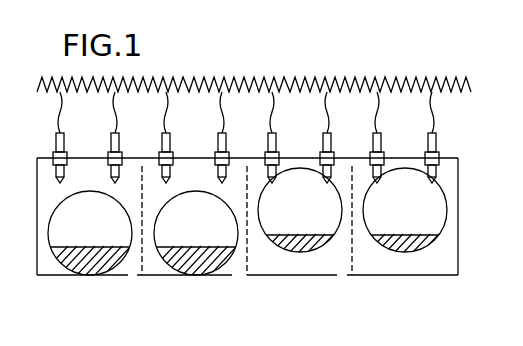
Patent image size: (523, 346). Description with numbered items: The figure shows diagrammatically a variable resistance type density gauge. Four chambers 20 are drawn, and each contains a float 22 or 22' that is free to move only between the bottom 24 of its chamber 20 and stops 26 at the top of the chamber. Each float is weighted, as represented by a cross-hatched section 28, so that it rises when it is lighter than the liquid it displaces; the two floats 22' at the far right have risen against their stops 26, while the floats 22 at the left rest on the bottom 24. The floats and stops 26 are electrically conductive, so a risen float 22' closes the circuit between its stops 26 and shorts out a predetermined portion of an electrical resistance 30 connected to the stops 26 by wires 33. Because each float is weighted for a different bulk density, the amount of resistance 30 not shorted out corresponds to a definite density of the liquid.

The chamber 20 is at (80, 187).
The float 22 is at (246, 229).
The float 22' is at (354, 229).
The bottom 24 is at (96, 276).
The stops 26 is at (62, 131).
The cross-hatched section 28 is at (88, 272).
The electrical resistance 30 is at (222, 98).
The wires 33 is at (62, 109).